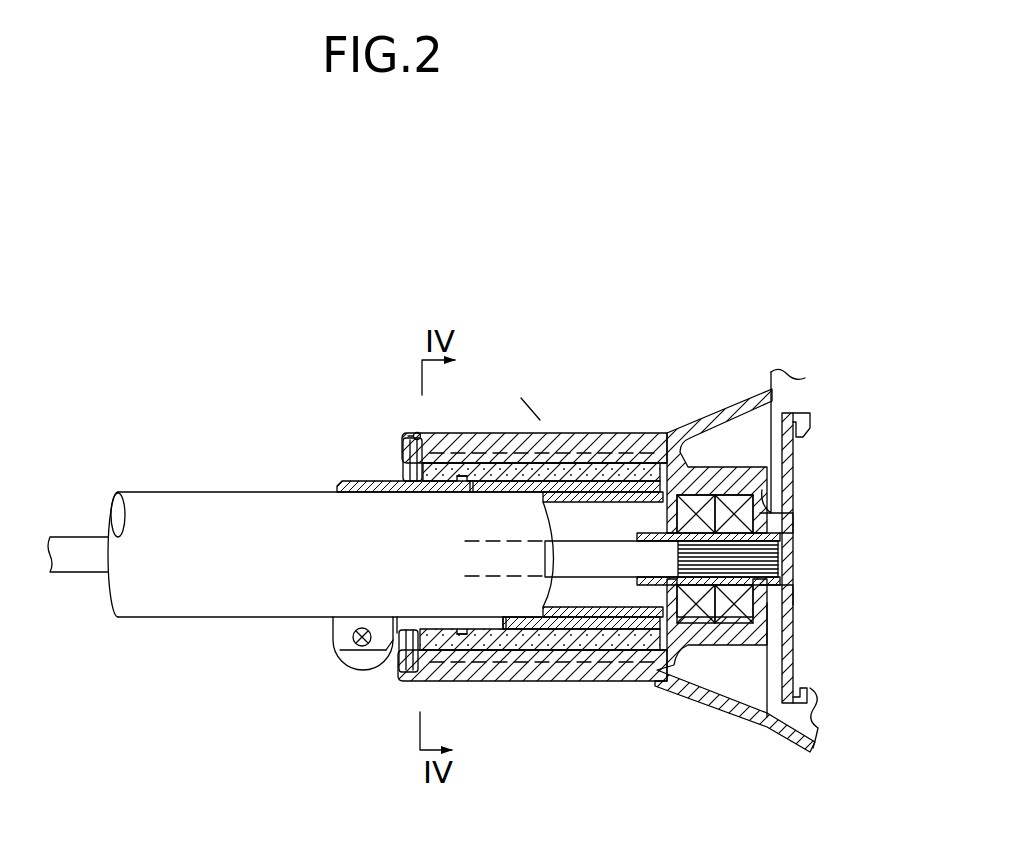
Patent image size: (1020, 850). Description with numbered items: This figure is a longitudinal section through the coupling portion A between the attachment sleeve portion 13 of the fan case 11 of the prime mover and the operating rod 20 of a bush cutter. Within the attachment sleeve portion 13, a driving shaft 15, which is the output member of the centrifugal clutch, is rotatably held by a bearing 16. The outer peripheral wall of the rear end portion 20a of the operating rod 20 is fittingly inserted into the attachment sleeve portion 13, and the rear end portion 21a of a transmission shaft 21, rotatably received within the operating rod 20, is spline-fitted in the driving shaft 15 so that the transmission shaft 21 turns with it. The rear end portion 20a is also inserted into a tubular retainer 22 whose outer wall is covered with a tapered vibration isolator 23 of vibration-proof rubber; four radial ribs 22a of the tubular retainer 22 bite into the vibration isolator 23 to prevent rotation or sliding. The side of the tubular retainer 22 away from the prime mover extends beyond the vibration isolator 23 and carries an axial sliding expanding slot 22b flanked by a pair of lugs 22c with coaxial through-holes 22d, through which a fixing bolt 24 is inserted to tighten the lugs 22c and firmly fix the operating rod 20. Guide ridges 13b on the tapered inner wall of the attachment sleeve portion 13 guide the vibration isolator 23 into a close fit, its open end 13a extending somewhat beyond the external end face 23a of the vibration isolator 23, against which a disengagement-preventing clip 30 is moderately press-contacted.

The fan case 11 is at (772, 378).
The attachment sleeve portion 13 is at (601, 433).
The open end 13a is at (402, 438).
The guide ridges 13b is at (555, 470).
The driving shaft 15 is at (795, 517).
The bearing 16 is at (722, 497).
The operating rod 20 is at (178, 490).
The rear end portion 20a is at (526, 598).
The transmission shaft 21 is at (585, 560).
The rear end portion 21a is at (663, 560).
The tubular retainer 22 is at (360, 481).
The ribs 22a is at (470, 470).
The sliding expanding slot 22b is at (385, 660).
The lugs 22c is at (347, 660).
The through-holes 22d is at (367, 655).
The vibration isolator 23 is at (497, 475).
The external end face 23a is at (393, 493).
The fixing bolt 24 is at (340, 637).
The disengagement-preventing clip 30 is at (415, 432).
The coupling portion A is at (525, 403).